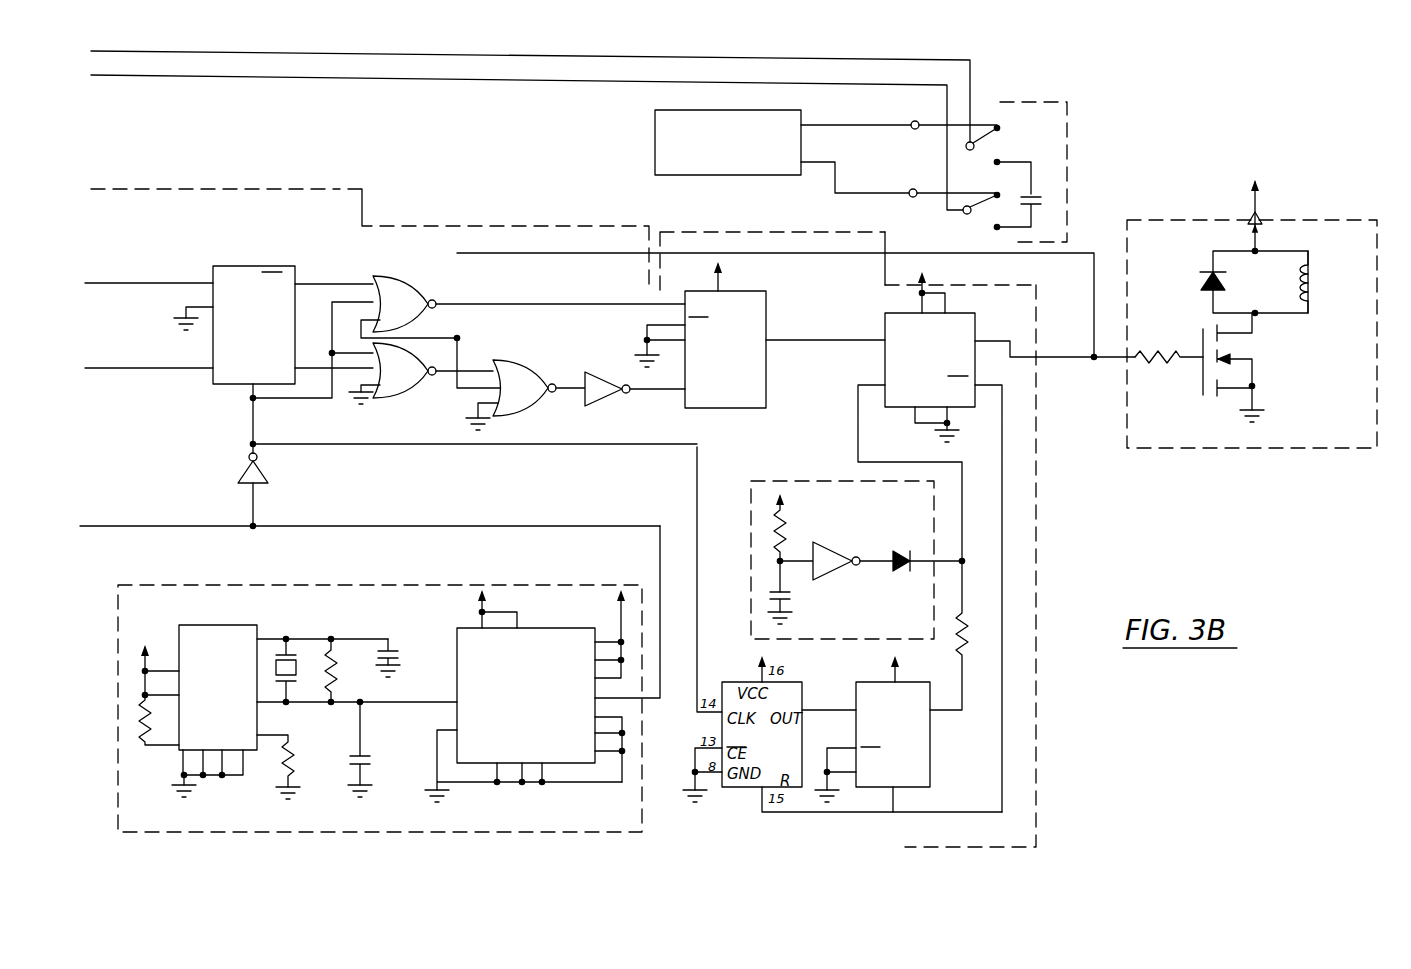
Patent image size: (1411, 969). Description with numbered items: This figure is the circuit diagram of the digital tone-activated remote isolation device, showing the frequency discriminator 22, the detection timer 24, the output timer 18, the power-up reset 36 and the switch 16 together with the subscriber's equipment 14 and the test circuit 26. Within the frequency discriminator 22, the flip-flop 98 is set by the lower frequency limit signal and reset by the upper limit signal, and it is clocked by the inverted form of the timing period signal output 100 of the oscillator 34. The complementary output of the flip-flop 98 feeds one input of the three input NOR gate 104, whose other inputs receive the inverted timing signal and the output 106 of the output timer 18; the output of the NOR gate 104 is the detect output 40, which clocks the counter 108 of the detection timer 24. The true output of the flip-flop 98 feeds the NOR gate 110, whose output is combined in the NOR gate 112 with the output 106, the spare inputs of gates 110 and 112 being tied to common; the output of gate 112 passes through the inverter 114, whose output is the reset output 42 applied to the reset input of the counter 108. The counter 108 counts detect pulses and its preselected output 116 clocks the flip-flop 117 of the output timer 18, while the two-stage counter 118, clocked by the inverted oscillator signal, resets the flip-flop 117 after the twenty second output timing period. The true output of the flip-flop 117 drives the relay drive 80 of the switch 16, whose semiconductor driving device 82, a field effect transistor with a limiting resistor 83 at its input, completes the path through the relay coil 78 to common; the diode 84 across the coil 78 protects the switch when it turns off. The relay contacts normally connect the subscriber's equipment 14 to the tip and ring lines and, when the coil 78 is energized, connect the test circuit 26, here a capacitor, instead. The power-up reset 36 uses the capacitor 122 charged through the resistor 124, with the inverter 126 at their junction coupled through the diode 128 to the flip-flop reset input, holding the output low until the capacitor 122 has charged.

The subscriber's equipment 14 is at (655, 133).
The switch 16 is at (1150, 214).
The output timer 18 is at (1038, 543).
The frequency discriminator 22 is at (374, 217).
The detection timer 24 is at (818, 222).
The test circuit 26 is at (1046, 148).
The oscillator 34 is at (437, 833).
The power-up reset 36 is at (818, 478).
The detect output 40 is at (583, 305).
The reset output 42 is at (642, 400).
The relay coil 78 is at (1316, 280).
The relay drive 80 is at (1211, 404).
The semiconductor driving device 82 is at (1200, 383).
The limiting resistor 83 is at (1170, 356).
The diode 84 is at (1204, 283).
The flip-flop 98 is at (256, 266).
The timing period signal output 100 is at (343, 442).
The three input NOR gate 104 is at (398, 286).
The output of the output timer 106 is at (1074, 253).
The counter 108 is at (766, 291).
The three input NOR gate 110 is at (386, 398).
The three input NOR gate 112 is at (528, 408).
The inverter 114 is at (606, 378).
The output of the counter 116 is at (840, 342).
The flip-flop 117 is at (976, 314).
The two-stage counter 118 is at (942, 766).
The capacitor 122 is at (795, 590).
The resistor 124 is at (789, 535).
The inverter 126 is at (836, 545).
The diode 128 is at (899, 576).